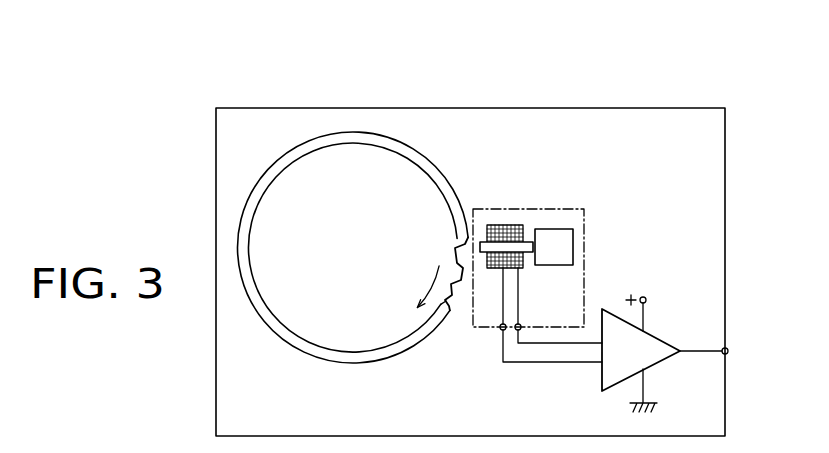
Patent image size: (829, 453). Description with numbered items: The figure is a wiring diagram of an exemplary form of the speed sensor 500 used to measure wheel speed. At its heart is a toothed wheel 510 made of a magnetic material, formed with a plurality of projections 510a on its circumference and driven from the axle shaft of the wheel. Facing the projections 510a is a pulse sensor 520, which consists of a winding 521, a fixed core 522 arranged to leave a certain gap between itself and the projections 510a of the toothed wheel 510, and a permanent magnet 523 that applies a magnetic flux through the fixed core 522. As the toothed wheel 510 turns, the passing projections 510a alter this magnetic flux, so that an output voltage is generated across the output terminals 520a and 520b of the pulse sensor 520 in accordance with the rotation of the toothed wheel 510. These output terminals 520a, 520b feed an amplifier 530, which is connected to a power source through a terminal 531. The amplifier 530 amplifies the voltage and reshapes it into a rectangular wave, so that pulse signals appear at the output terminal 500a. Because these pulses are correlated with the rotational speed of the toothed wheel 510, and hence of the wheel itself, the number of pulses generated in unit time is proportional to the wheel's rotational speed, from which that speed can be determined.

The speed sensor 500 is at (478, 108).
The output terminal 500a is at (728, 351).
The toothed wheel 510 is at (422, 206).
The projections 510a is at (447, 306).
The pulse sensor 520 is at (556, 210).
The output terminal 520a is at (518, 331).
The output terminal 520b is at (500, 330).
The winding 521 is at (517, 224).
The fixed core 522 is at (487, 224).
The permanent magnet 523 is at (573, 236).
The amplifier 530 is at (660, 362).
The terminal 531 is at (646, 300).